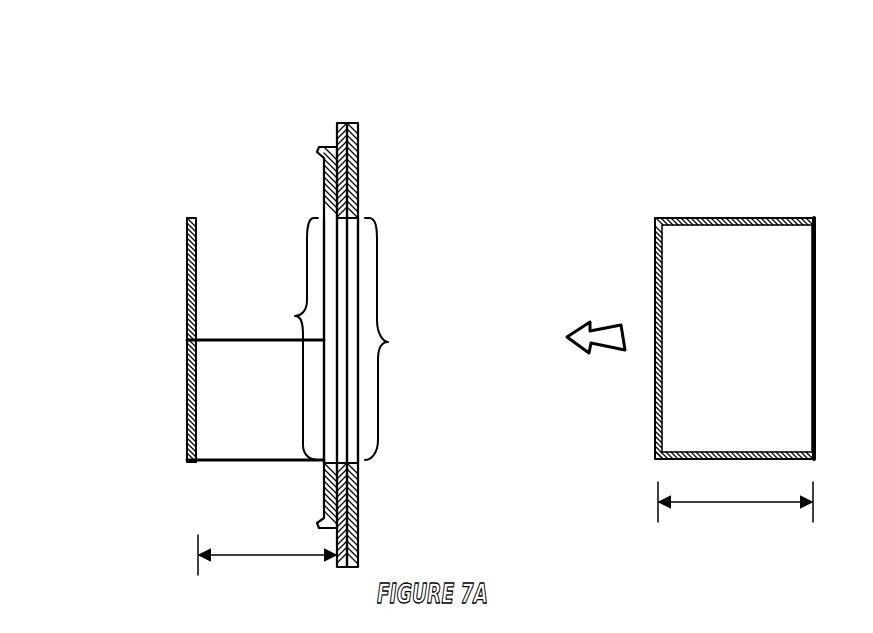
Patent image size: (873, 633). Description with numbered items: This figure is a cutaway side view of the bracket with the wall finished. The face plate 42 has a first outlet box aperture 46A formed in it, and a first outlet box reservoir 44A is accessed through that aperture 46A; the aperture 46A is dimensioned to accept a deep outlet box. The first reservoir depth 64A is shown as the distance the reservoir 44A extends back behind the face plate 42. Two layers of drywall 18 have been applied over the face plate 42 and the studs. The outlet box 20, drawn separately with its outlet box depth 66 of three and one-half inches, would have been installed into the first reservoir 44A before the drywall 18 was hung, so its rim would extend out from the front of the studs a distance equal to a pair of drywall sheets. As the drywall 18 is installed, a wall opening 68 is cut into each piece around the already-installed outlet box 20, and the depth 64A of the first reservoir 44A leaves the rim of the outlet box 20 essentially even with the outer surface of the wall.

The drywall 18 is at (343, 122).
The outlet box 20 is at (788, 218).
The face plate 42 is at (324, 484).
The first outlet box reservoir 44A is at (188, 313).
The first outlet box aperture 46A is at (295, 316).
The first reservoir depth 64A is at (270, 556).
The outlet box depth 66 is at (730, 503).
The wall opening 68 is at (388, 342).